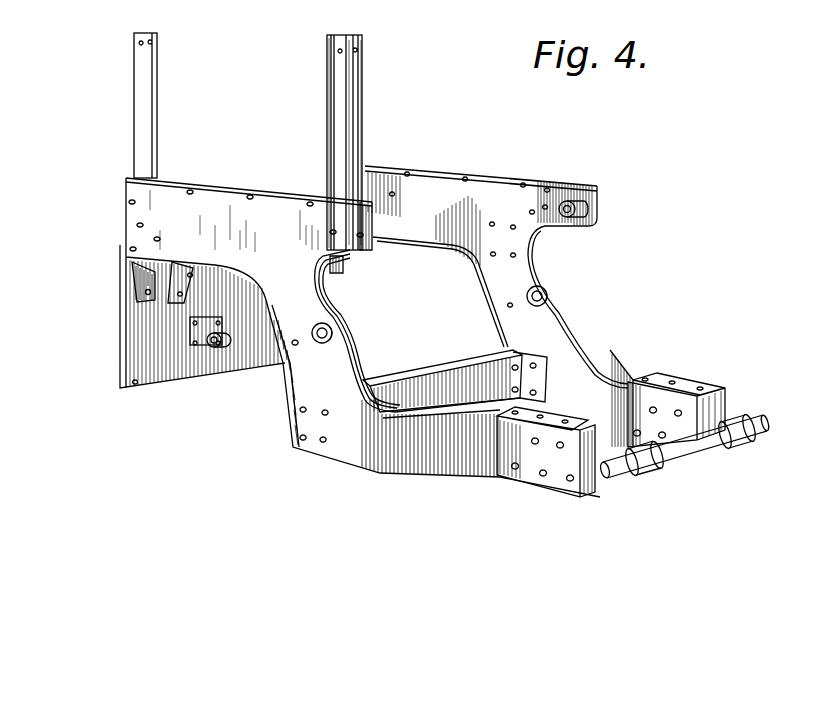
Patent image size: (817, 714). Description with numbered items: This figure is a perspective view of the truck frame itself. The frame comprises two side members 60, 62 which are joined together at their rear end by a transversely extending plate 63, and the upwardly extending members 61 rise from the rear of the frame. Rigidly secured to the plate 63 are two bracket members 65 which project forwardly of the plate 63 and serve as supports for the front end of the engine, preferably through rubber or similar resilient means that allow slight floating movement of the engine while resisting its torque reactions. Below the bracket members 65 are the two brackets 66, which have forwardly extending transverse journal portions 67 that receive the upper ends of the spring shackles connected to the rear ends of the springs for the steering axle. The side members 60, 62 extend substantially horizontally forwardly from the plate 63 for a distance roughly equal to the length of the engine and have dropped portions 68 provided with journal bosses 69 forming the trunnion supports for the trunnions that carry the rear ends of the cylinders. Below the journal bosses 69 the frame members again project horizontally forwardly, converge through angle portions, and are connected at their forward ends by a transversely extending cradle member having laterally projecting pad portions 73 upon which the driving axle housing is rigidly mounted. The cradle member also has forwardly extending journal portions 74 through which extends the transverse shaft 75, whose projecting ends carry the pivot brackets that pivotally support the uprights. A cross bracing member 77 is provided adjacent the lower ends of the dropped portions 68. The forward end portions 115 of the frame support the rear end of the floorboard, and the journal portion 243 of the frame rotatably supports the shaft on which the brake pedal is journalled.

The side member 60 is at (370, 452).
The upright posts 61 is at (330, 62).
The side member 62 is at (563, 335).
The transversely extending plate 63 is at (162, 373).
The bracket member 65 is at (172, 295).
The bracket 66 is at (223, 325).
The transverse journal portion 67 is at (220, 347).
The dropped portion 68 is at (335, 367).
The journal boss 69 is at (350, 326).
The pad portion 73 is at (518, 420).
The journal portion 74 is at (740, 447).
The transverse shaft 75 is at (770, 418).
The cross bracing member 77 is at (445, 372).
The forward end portion of the frame 115 is at (372, 250).
The journal portion 243 is at (590, 210).